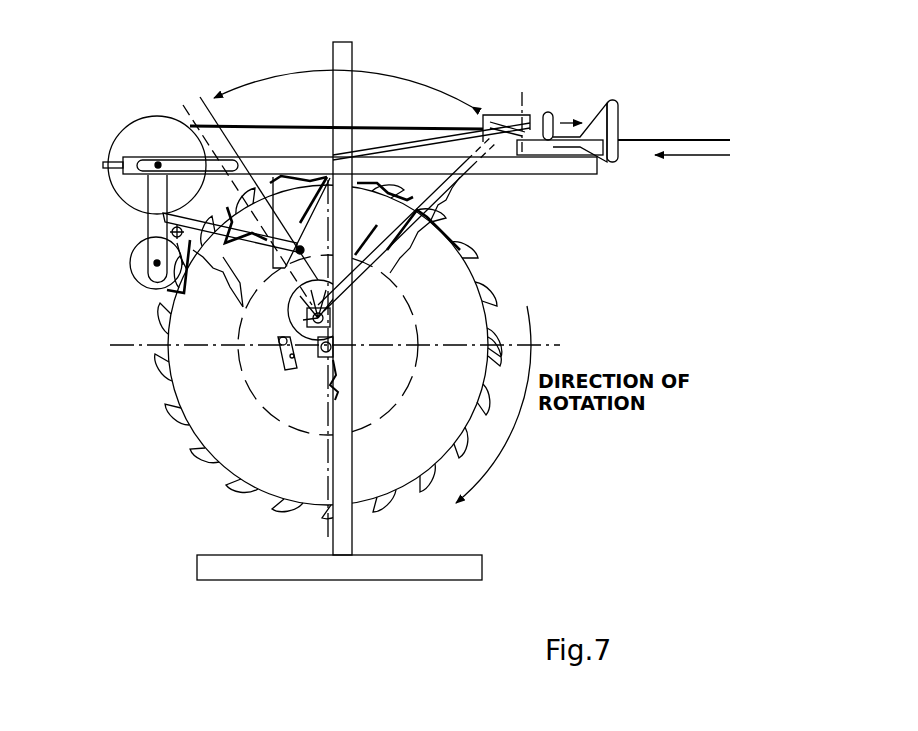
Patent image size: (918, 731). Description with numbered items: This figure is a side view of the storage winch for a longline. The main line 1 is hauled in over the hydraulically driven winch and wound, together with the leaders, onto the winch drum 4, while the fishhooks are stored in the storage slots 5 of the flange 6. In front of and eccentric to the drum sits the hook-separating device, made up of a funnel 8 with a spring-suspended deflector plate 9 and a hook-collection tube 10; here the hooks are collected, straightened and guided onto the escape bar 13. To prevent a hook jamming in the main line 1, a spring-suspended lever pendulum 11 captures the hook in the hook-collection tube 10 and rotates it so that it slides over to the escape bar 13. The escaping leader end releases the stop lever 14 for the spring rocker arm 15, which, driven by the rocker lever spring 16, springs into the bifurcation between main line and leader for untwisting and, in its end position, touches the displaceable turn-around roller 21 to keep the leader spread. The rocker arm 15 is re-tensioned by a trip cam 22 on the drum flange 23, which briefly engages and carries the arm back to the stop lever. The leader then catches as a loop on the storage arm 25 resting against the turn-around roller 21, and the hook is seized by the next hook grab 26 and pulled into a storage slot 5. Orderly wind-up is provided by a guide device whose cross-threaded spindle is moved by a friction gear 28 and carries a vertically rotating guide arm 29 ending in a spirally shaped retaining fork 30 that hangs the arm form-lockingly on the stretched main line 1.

The main line 1 is at (323, 200).
The winch drum 4 is at (248, 355).
The storage slots 5 is at (288, 197).
The flange 6 is at (205, 105).
The funnel 8 is at (612, 125).
The spring-suspended deflector plate 9 is at (583, 118).
The hook-collection tube 10 is at (545, 140).
The spring-suspended lever pendulum 11 is at (551, 113).
The escape bar 13 is at (400, 147).
The stop lever 14 is at (485, 130).
The spring rocker arm 15 is at (183, 108).
The rocker lever spring 16 is at (323, 364).
The displaceable turn-around roller 21 is at (140, 128).
The trip cam 22 is at (300, 330).
The drum flange 23 is at (305, 385).
The storage arm 25 is at (100, 170).
The hook grab 26 is at (190, 100).
The friction gear 28 is at (128, 248).
The guide arm 29 is at (258, 250).
The retaining fork 30 is at (240, 335).